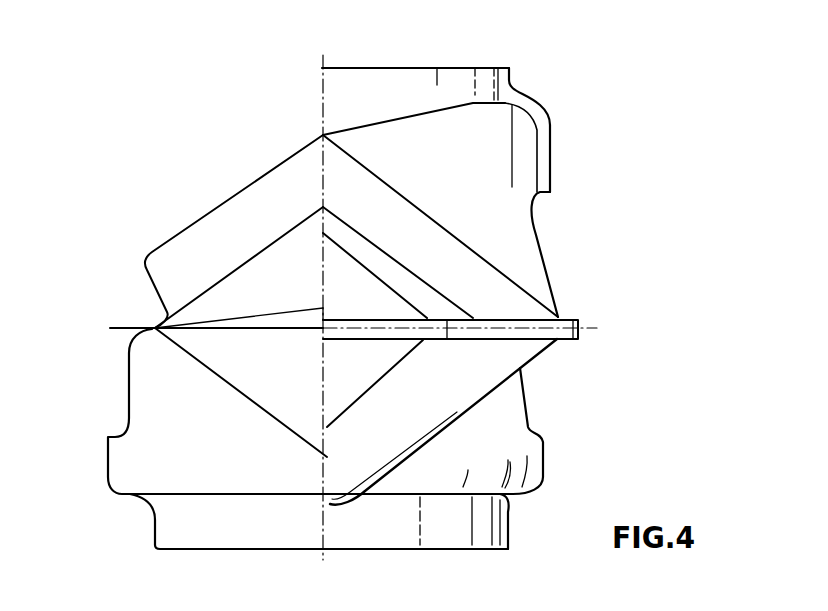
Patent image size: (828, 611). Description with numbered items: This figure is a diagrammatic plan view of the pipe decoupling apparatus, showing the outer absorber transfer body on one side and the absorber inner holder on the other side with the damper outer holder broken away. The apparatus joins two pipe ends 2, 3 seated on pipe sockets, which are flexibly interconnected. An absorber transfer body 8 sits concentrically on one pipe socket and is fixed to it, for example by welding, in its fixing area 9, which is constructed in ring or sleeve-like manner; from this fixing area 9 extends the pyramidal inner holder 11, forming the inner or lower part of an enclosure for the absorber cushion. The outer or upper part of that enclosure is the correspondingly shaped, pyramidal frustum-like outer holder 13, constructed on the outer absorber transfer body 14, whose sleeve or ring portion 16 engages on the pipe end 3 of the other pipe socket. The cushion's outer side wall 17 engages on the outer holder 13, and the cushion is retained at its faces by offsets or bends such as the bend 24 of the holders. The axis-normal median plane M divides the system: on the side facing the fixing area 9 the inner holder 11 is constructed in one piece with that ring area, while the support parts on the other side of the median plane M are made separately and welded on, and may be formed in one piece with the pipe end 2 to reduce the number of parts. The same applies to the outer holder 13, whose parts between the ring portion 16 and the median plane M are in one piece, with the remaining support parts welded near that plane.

The pipe end 2 is at (483, 549).
The pipe end 3 is at (463, 68).
The absorber transfer body 8 is at (128, 392).
The fixing area 9 is at (508, 523).
The inner holder 11 is at (200, 302).
The outer holder 13 is at (480, 277).
The outer absorber transfer body 14 is at (550, 160).
The ring portion 16 is at (513, 78).
The outer side wall 17 is at (543, 349).
The bend 24 is at (228, 228).
The median plane M is at (592, 327).